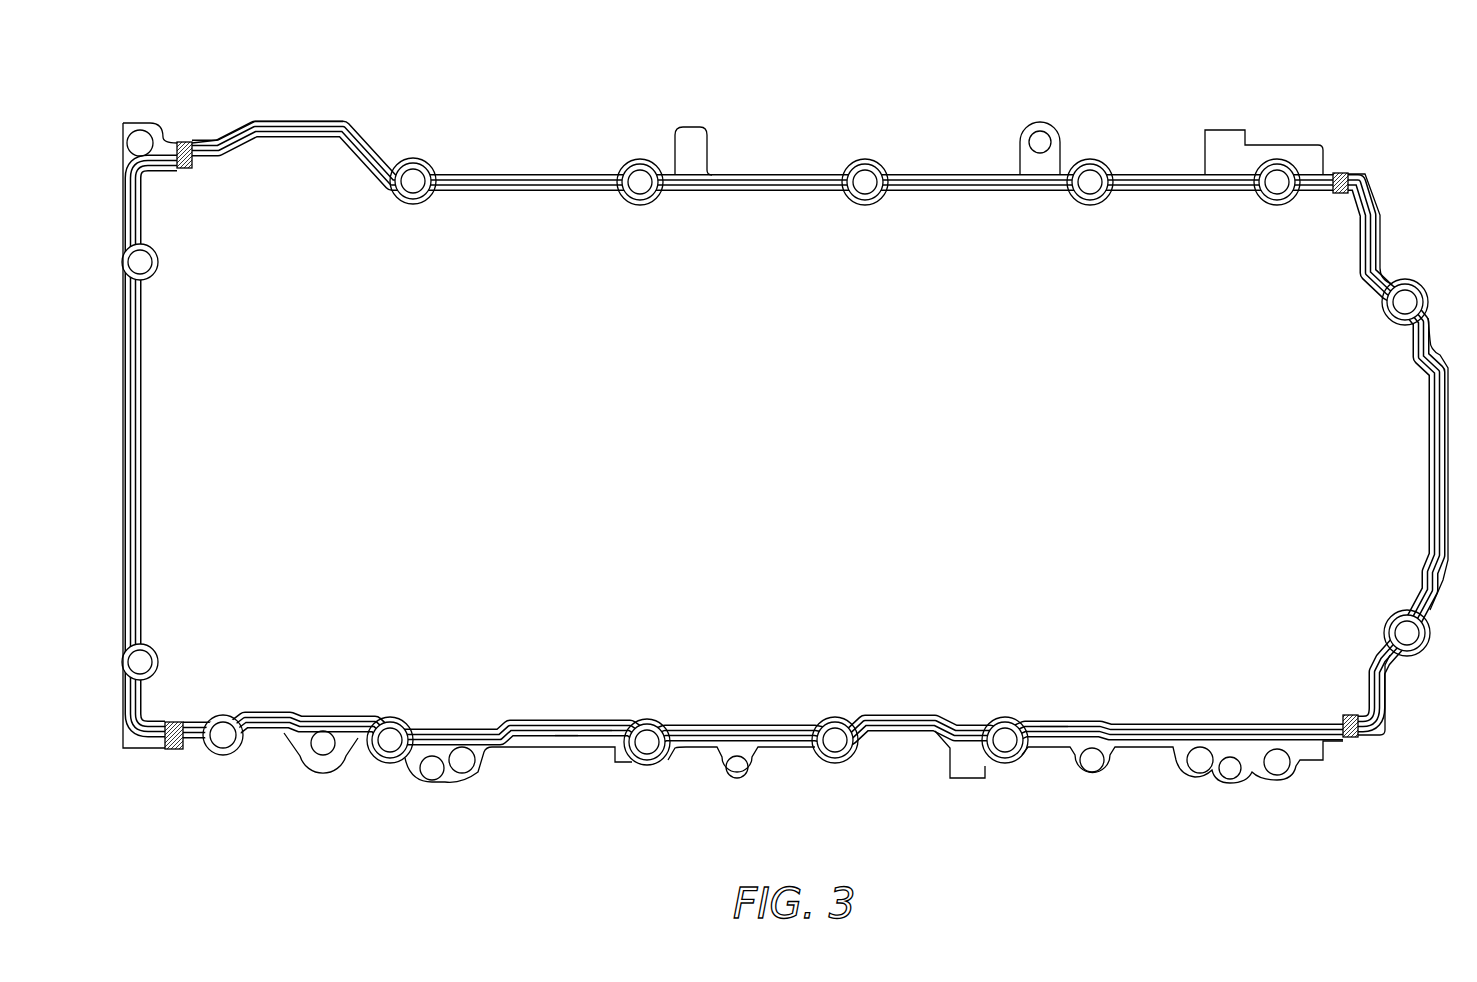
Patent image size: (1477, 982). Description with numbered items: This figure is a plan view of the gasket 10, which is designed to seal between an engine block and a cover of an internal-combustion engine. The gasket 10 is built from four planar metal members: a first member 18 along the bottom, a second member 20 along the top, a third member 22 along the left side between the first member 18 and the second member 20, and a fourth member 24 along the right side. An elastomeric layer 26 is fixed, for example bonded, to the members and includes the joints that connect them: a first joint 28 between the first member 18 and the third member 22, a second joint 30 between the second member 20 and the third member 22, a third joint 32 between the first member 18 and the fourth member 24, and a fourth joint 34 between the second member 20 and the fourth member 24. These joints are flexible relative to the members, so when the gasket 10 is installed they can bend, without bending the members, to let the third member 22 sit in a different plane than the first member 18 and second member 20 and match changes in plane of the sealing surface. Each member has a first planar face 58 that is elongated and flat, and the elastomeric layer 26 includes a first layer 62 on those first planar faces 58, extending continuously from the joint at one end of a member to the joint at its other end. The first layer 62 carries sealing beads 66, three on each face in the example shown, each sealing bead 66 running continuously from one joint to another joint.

The gasket 10 is at (782, 426).
The first member 18 is at (693, 748).
The second member 20 is at (955, 173).
The third member 22 is at (120, 406).
The fourth member 24 is at (1443, 474).
The elastomeric layer 26 is at (565, 734).
The first joint 28 is at (172, 750).
The second joint 30 is at (185, 141).
The third joint 32 is at (1350, 740).
The fourth joint 34 is at (1345, 172).
The first planar face 58 is at (737, 173).
The first layer 62 is at (601, 729).
The sealing beads 66 is at (1063, 728).